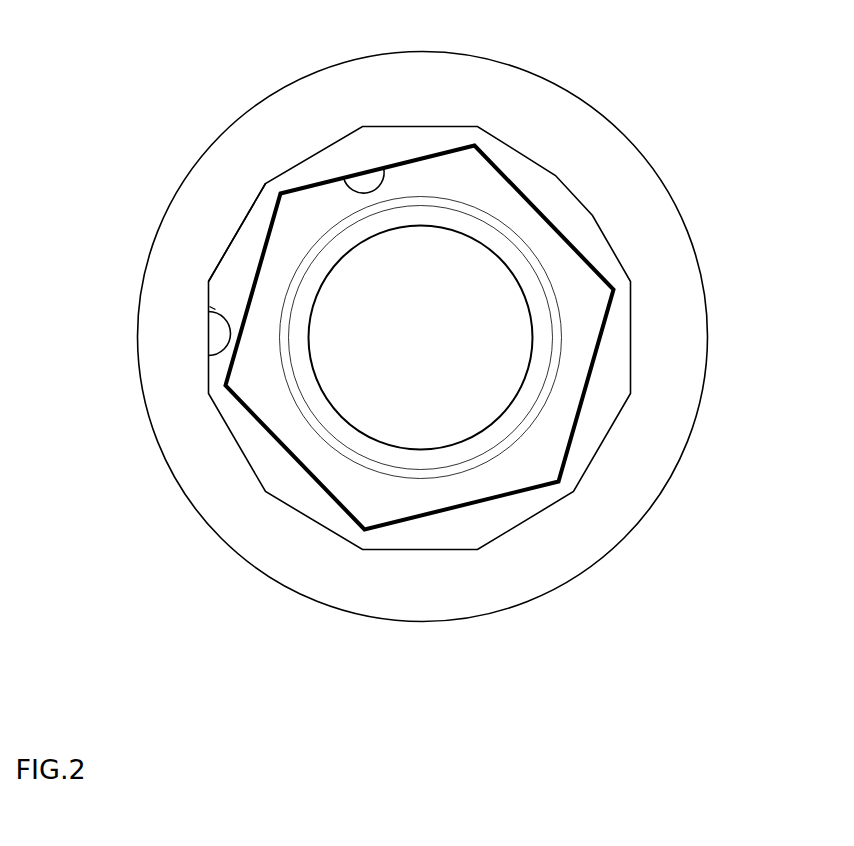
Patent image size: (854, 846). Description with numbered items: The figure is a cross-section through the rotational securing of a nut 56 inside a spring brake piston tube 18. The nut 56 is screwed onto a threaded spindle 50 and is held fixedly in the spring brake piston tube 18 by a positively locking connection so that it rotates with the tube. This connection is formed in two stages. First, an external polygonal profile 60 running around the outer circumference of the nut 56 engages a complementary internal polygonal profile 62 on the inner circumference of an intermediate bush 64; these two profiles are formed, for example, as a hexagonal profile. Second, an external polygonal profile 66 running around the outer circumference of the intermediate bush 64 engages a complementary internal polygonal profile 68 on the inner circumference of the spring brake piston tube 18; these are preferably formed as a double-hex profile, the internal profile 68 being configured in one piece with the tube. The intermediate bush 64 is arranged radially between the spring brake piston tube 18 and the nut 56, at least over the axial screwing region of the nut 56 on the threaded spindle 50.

The spring brake piston tube 18 is at (500, 590).
The threaded spindle 50 is at (470, 383).
The nut 56 is at (610, 290).
The external polygonal profile 60 is at (410, 157).
The internal polygonal profile 62 is at (344, 172).
The intermediate bush 64 is at (552, 192).
The external polygonal profile 66 is at (247, 214).
The internal polygonal profile 68 is at (208, 353).